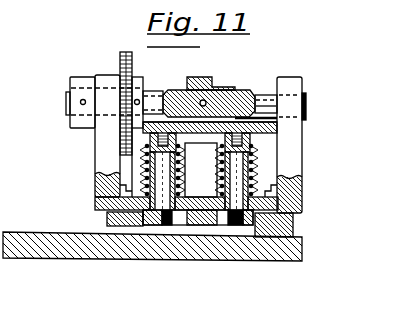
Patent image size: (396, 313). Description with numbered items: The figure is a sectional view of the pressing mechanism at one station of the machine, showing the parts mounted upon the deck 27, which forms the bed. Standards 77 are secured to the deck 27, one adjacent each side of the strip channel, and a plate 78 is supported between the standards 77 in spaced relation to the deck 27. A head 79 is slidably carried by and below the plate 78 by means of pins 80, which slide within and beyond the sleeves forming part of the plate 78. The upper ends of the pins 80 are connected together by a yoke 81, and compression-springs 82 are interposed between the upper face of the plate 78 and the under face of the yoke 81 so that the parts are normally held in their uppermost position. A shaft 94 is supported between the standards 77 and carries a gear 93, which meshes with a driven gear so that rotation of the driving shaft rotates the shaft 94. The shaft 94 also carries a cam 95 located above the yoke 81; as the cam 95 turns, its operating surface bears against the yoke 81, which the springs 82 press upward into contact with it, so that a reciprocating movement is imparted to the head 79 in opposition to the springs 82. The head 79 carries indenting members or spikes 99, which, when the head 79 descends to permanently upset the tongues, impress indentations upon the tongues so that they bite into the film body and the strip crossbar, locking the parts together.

The deck 27 is at (303, 257).
The standards 77 is at (99, 157).
The plate 78 is at (200, 200).
The head 79 is at (143, 217).
The pins 80 is at (164, 175).
The yoke 81 is at (254, 130).
The compression-springs 82 is at (150, 161).
The gear 93 is at (123, 55).
The shaft 94 is at (258, 103).
The cam 95 is at (210, 77).
The indenting members or spikes 99 is at (213, 224).